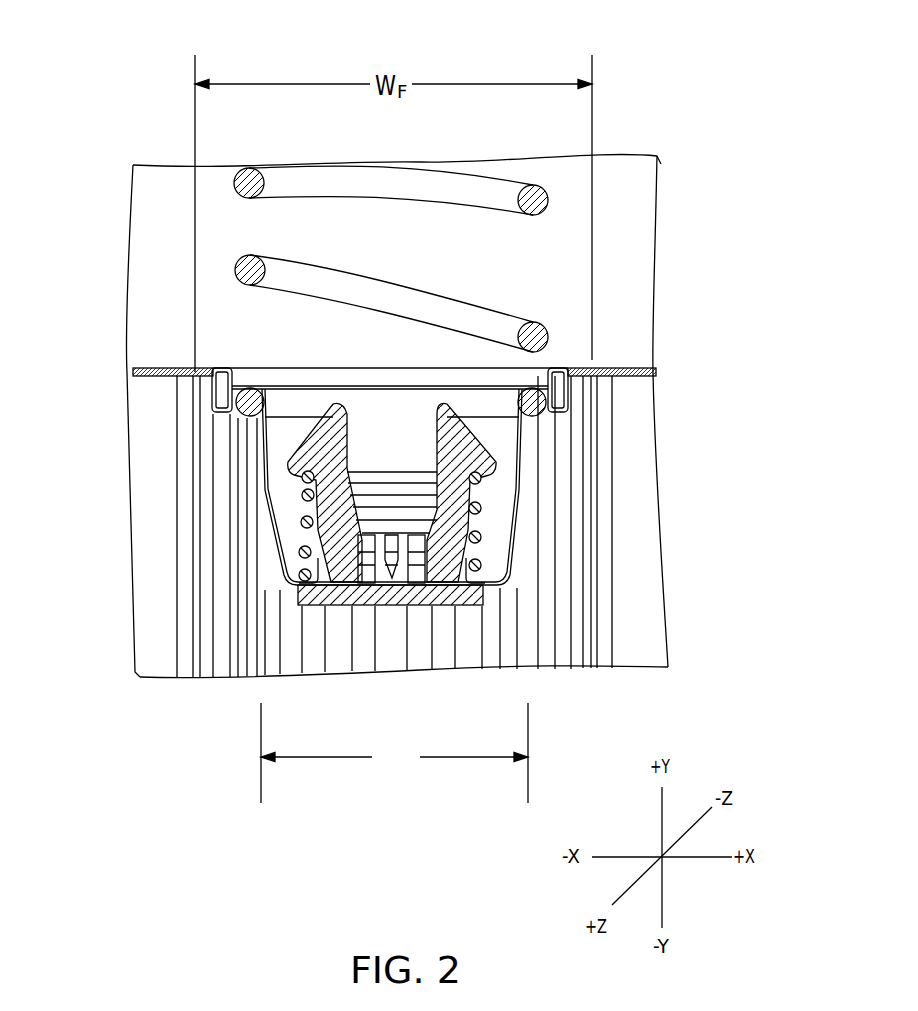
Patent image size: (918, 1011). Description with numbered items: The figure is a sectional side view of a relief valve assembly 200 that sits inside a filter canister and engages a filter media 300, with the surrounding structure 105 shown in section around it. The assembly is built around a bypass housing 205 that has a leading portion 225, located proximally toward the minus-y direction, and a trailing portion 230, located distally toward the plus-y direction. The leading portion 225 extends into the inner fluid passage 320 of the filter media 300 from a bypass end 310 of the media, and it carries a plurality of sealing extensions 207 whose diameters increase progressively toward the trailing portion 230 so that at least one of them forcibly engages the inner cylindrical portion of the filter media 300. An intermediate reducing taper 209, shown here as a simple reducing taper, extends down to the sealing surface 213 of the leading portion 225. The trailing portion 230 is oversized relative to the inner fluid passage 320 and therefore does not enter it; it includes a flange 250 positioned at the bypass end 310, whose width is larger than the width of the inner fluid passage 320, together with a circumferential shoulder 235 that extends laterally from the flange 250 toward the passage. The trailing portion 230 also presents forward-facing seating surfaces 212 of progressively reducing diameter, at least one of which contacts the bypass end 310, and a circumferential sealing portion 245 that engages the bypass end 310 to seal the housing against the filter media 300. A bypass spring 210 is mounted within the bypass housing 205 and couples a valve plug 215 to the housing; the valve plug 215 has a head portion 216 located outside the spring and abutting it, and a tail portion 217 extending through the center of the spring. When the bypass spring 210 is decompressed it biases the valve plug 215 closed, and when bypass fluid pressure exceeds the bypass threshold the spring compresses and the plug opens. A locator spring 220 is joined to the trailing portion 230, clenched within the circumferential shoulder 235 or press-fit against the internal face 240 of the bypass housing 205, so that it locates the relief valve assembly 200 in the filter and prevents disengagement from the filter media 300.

The relief valve assembly 200 is at (127, 90).
The housing 105 is at (648, 277).
The locator spring 220 is at (443, 300).
The bypass end 310 is at (583, 357).
The trailing portion 230 is at (355, 358).
The internal face 240 is at (537, 395).
The flange 250 is at (213, 369).
The sealing extensions 207 is at (236, 398).
The circumferential shoulder 235 is at (216, 428).
The circumferential sealing portion 245 is at (262, 447).
The intermediate reducing taper 209 is at (300, 503).
The valve plug 215 is at (305, 554).
The sealing surface 213 is at (300, 588).
The inner fluid passage 320 is at (360, 672).
The leading portion 225 is at (394, 618).
The head portion 216 is at (431, 598).
The filter media 300 is at (560, 650).
The bypass spring 210 is at (418, 473).
The tail portion 217 is at (498, 463).
The forward-facing seating surfaces 212 is at (548, 376).
The bypass housing 205 is at (522, 500).